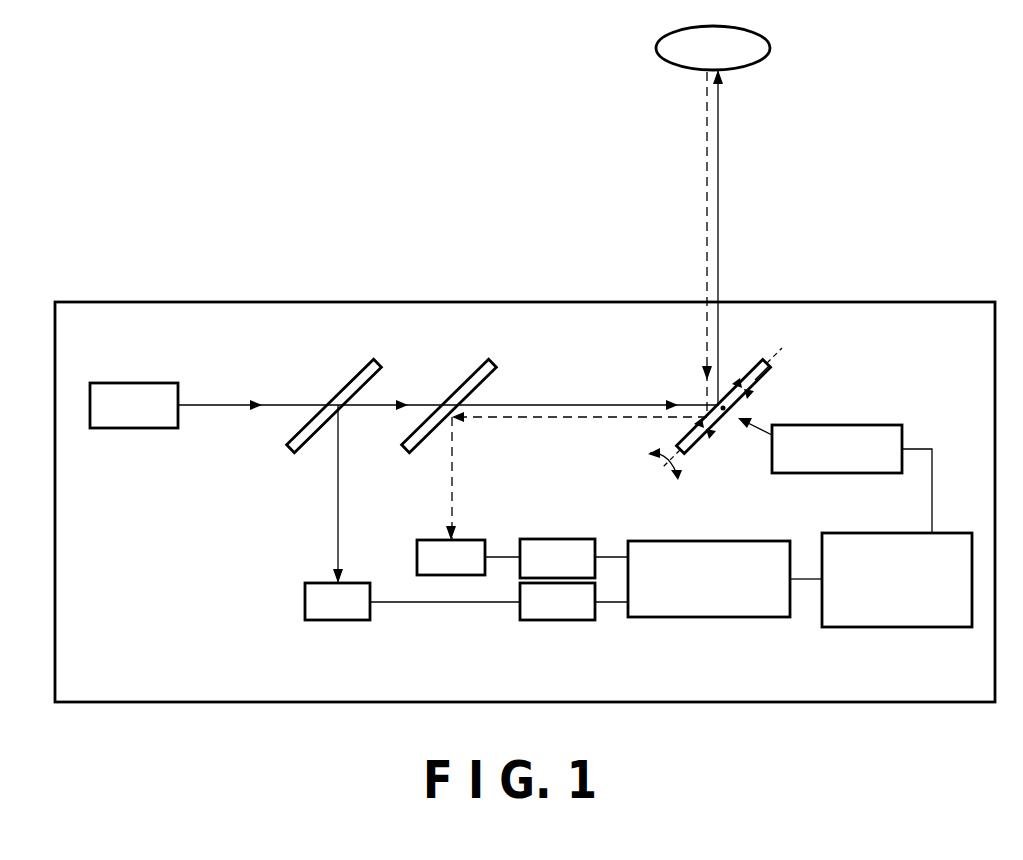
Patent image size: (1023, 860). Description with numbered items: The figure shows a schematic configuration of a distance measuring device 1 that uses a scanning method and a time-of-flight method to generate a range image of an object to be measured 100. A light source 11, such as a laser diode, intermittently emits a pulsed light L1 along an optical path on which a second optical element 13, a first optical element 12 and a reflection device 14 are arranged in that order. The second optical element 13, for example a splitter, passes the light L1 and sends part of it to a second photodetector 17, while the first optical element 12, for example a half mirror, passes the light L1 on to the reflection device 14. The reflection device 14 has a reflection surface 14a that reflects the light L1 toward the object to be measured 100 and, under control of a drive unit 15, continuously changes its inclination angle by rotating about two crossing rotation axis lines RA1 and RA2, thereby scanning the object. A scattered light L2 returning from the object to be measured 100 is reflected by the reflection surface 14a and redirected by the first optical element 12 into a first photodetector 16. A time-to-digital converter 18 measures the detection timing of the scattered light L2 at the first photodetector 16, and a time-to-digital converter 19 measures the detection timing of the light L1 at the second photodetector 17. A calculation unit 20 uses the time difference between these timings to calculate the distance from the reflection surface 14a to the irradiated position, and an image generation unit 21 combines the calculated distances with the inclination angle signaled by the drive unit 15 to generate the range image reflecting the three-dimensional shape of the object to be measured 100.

The distance measuring device 1 is at (235, 302).
The object to be measured 100 is at (767, 42).
The light source 11 is at (163, 383).
The first optical element 12 is at (463, 378).
The second optical element 13 is at (342, 378).
The reflection device 14 is at (760, 385).
The reflection surface 14a is at (757, 373).
The drive unit 15 is at (835, 473).
The first photodetector 16 is at (435, 538).
The second photodetector 17 is at (337, 622).
The time-to-digital converter 18 is at (557, 538).
The time-to-digital converter 19 is at (557, 622).
The calculation unit 20 is at (713, 617).
The image generation unit 21 is at (885, 627).
The light L1 is at (214, 403).
The scattered light L2 is at (707, 197).
The rotation axis line RA1 is at (727, 415).
The rotation axis line RA2 is at (775, 358).